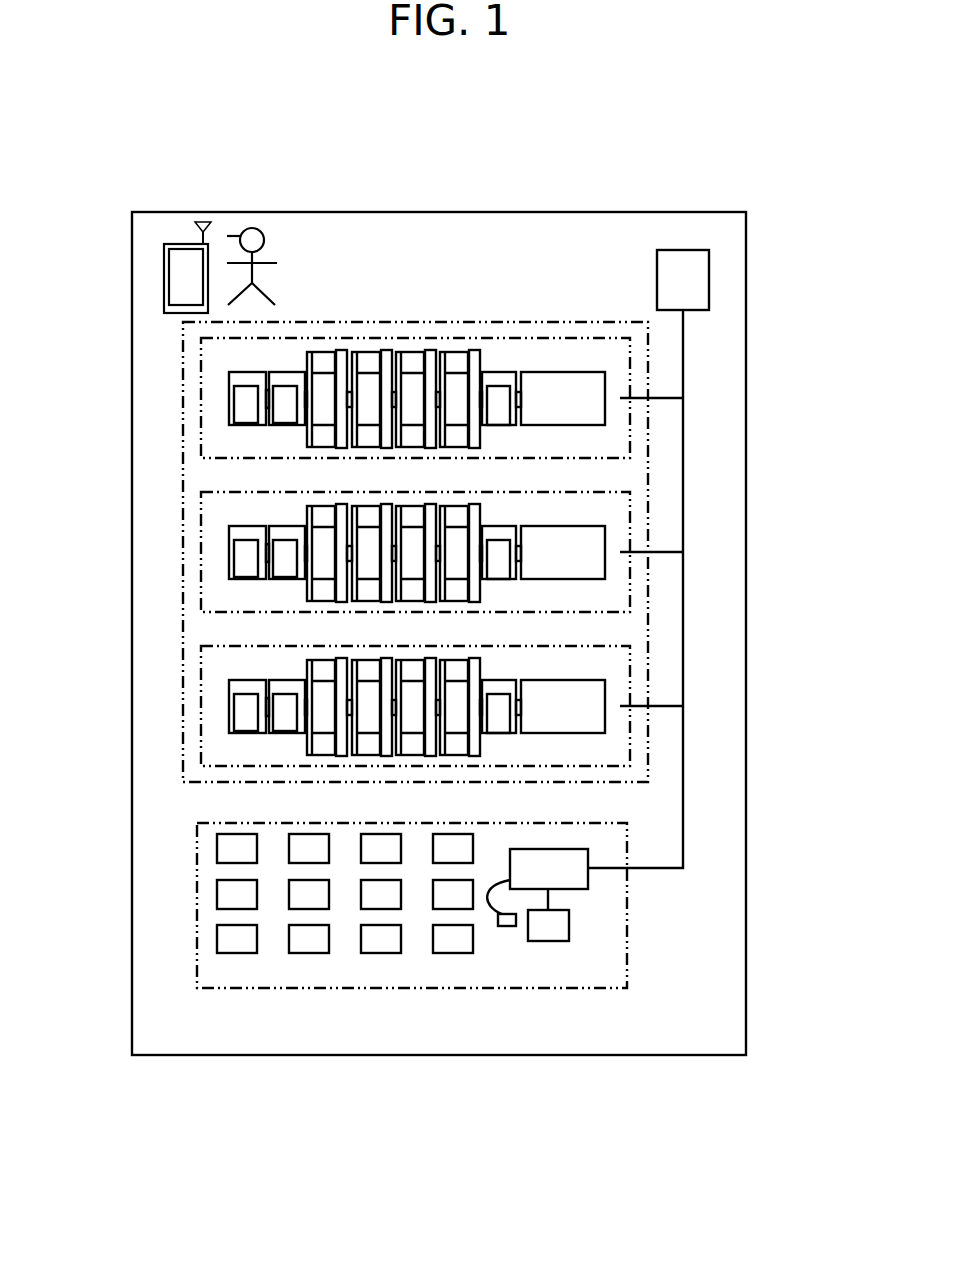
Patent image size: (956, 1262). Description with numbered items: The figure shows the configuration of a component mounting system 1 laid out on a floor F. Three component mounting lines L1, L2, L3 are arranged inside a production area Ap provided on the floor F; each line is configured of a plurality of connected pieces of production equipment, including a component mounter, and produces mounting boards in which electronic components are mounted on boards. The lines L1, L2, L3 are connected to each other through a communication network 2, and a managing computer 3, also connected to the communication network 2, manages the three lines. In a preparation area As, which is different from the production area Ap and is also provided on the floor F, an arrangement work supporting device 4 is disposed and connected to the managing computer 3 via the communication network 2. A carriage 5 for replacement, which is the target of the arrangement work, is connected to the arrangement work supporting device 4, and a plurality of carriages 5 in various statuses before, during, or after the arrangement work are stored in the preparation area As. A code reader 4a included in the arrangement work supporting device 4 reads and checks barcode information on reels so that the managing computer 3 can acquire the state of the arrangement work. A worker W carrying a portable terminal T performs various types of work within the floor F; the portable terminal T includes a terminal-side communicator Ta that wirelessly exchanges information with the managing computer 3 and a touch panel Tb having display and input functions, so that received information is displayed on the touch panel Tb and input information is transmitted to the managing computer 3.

The component mounting system 1 is at (402, 148).
The floor F is at (664, 211).
The portable terminal T is at (162, 296).
The terminal-side communicator Ta is at (200, 227).
The touch panel Tb is at (168, 255).
The worker W is at (252, 238).
The managing computer 3 is at (709, 280).
The communication network 2 is at (683, 456).
The production area Ap is at (183, 462).
The component mounting line L1 is at (630, 363).
The component mounting line L2 is at (630, 517).
The component mounting line L3 is at (630, 671).
The preparation area As is at (197, 900).
The carriage 5 is at (237, 940).
The arrangement work supporting device 4 is at (578, 878).
The code reader 4a is at (507, 927).